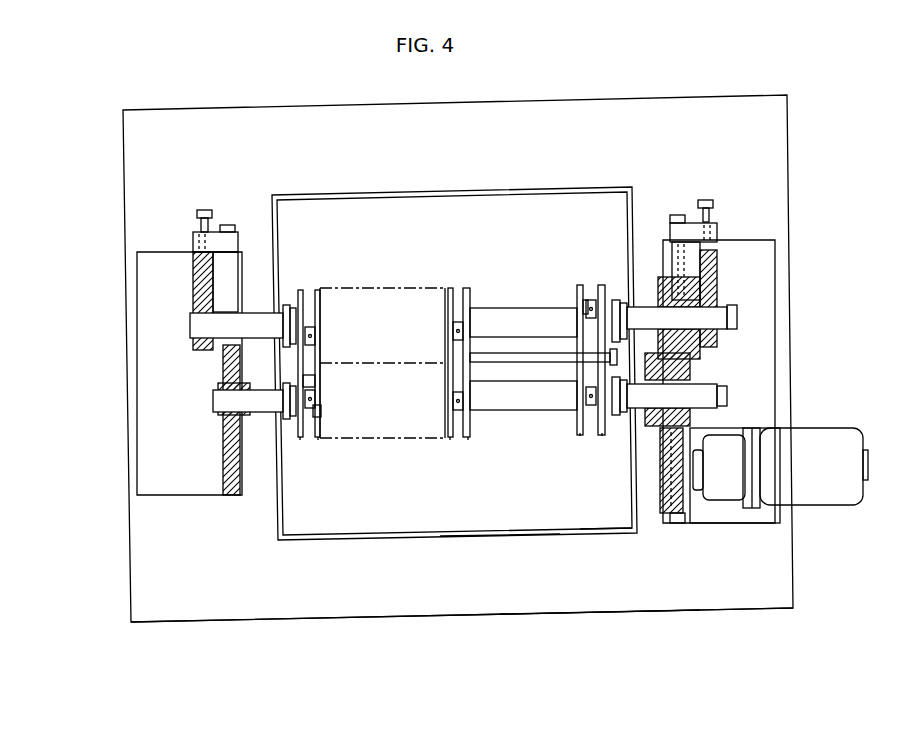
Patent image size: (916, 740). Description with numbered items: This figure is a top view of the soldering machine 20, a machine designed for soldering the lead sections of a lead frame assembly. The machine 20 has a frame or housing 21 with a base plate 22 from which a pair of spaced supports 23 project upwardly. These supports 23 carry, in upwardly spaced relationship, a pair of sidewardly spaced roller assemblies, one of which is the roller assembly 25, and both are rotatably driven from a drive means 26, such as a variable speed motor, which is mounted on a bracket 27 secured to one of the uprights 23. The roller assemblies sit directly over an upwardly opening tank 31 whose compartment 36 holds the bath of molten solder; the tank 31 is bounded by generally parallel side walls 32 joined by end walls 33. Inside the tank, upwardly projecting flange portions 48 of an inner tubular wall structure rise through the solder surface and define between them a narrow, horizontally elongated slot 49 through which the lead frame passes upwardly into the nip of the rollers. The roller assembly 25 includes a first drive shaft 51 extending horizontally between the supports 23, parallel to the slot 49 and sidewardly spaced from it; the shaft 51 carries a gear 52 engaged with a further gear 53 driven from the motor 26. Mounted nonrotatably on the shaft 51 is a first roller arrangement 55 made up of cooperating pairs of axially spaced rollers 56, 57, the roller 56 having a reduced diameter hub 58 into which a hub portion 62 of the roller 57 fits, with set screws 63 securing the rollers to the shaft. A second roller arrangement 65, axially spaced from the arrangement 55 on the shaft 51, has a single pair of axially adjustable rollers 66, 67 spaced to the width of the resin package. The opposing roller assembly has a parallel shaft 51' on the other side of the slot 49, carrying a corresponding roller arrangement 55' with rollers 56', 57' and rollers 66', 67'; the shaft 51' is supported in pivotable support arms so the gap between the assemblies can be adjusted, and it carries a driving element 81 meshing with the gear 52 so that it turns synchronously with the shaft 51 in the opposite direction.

The soldering machine 20 is at (165, 548).
The frame or housing 21 is at (253, 626).
The base plate 22 is at (566, 590).
The supports 23 is at (235, 497).
The roller assembly 25 is at (481, 230).
The drive means 26 is at (855, 440).
The bracket 27 is at (810, 427).
The tank 31 is at (499, 537).
The side walls 32 is at (362, 195).
The end walls 33 is at (273, 200).
The compartment 36 is at (584, 505).
The flange portions 48 is at (510, 353).
The slot 49 is at (527, 365).
The first drive shaft 51 is at (194, 402).
The rotatable shaft 51' is at (185, 326).
The gear 52 is at (660, 372).
The gear 53 is at (687, 433).
The first roller arrangement 55 is at (391, 437).
The roller arrangement 55' is at (382, 284).
The roller 56 is at (373, 468).
The roller 56' is at (373, 331).
The roller 57 is at (404, 468).
The roller 57' is at (400, 331).
The hub 58 is at (308, 382).
The hub portion / support arms 62 is at (197, 283).
The set screws / pivot shafts 63 is at (318, 412).
The second roller arrangement 65 is at (588, 278).
The roller 66 is at (566, 457).
The roller 66' is at (556, 335).
The roller 67 is at (606, 461).
The roller 67' is at (598, 316).
The driving element 81 is at (680, 295).